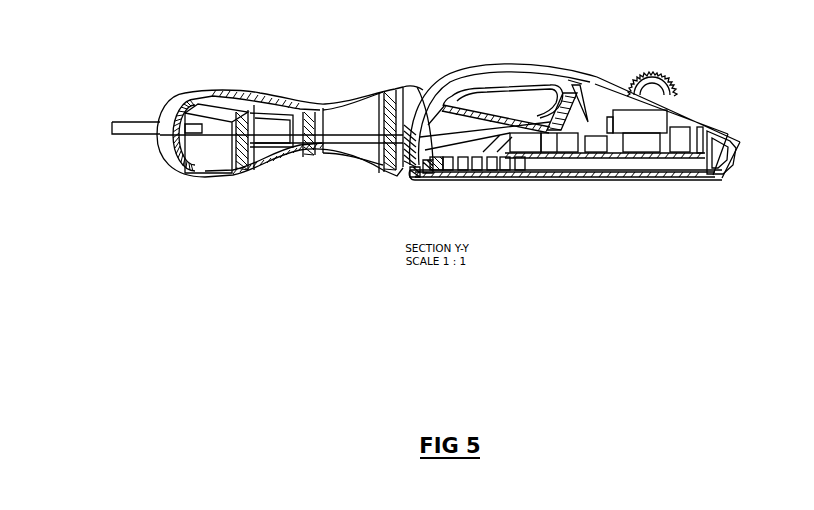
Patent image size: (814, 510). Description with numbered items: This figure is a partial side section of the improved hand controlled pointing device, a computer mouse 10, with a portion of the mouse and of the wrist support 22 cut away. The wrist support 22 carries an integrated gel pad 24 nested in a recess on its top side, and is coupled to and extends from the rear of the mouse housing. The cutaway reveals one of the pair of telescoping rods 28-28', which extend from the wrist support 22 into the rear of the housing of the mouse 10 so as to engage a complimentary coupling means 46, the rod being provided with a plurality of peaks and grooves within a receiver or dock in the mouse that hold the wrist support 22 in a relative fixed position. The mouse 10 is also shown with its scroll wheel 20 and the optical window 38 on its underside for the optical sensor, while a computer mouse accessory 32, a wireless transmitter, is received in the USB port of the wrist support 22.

The computer mouse 10 is at (737, 93).
The scroll wheel 20 is at (640, 75).
The wrist support 22 is at (410, 80).
The gel pad 24 is at (282, 96).
The telescoping rods 28-28' is at (381, 159).
The computer mouse accessory 32 is at (127, 128).
The optical window 38 is at (593, 175).
The complimentary coupling means 46 is at (482, 163).